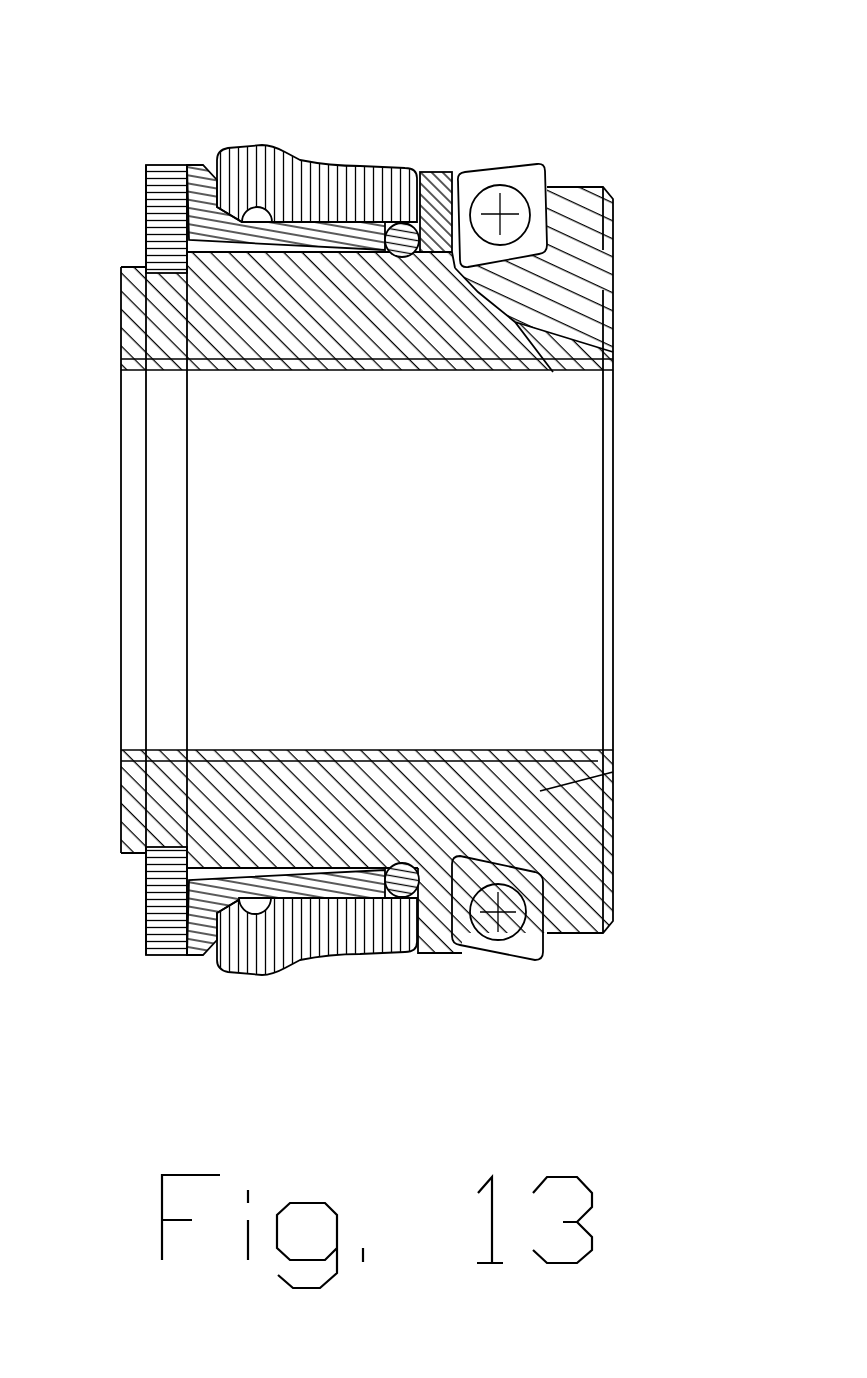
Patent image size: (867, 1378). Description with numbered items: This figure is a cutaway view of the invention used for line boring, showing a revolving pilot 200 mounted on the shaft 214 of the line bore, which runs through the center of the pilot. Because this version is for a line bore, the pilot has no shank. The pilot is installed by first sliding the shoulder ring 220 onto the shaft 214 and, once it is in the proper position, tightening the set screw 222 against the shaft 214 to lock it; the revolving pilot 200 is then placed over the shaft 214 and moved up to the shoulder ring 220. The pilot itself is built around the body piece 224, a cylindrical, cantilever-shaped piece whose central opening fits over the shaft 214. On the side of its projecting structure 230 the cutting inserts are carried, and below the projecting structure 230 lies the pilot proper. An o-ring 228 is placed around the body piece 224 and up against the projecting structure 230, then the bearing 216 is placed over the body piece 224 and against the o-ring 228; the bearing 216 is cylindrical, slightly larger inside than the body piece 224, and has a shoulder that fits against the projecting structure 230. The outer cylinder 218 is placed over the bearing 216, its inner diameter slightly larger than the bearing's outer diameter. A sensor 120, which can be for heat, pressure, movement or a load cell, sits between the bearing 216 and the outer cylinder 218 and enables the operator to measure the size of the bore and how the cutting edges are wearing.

The revolving pilot 200 is at (460, 982).
The shaft 214 is at (668, 595).
The body piece 224 is at (537, 362).
The set screw 222 is at (170, 222).
The shoulder ring 220 is at (165, 903).
The bearing 216 is at (202, 190).
The outer cylinder 218 is at (335, 183).
The sensor 120 is at (256, 210).
The projecting structure 230 is at (430, 193).
The o-ring 228 is at (410, 232).